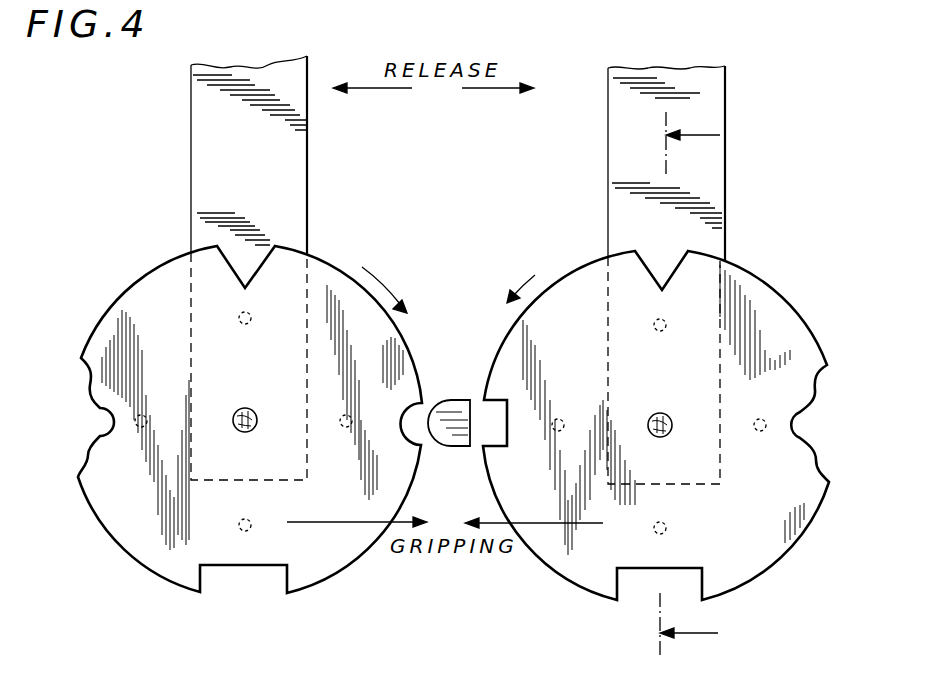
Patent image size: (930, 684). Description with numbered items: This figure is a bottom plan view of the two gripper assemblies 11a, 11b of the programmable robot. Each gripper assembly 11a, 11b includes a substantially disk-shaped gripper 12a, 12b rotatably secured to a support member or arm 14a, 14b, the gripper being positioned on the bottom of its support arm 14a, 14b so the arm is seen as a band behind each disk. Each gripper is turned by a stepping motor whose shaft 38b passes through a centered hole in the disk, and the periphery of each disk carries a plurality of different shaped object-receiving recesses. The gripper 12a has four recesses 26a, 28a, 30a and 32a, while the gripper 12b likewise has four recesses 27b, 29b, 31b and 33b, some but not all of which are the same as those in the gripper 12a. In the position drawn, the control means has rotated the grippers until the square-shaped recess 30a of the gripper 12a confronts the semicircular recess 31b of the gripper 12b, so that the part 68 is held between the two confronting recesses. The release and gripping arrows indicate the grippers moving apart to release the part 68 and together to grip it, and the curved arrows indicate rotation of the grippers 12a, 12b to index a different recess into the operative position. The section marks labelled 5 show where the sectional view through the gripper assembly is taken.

The gripper assembly 11a is at (797, 288).
The gripper assembly 11b is at (138, 271).
The gripper 12a is at (803, 344).
The gripper 12b is at (122, 514).
The support arm 14a is at (608, 172).
The support arm 14b is at (191, 180).
The object-receiving recess 26a is at (800, 425).
The object-receiving recess 27b is at (108, 422).
The object-receiving recess 28a is at (668, 270).
The object-receiving recess 29b is at (245, 262).
The square-shaped recess 30a is at (492, 418).
The semicircular recess 31b is at (402, 402).
The object-receiving recess 32a is at (628, 582).
The object-receiving recess 33b is at (228, 578).
The motor shaft 38b is at (240, 414).
The part 68 is at (452, 438).
The section line for FIG. 5 is at (709, 383).